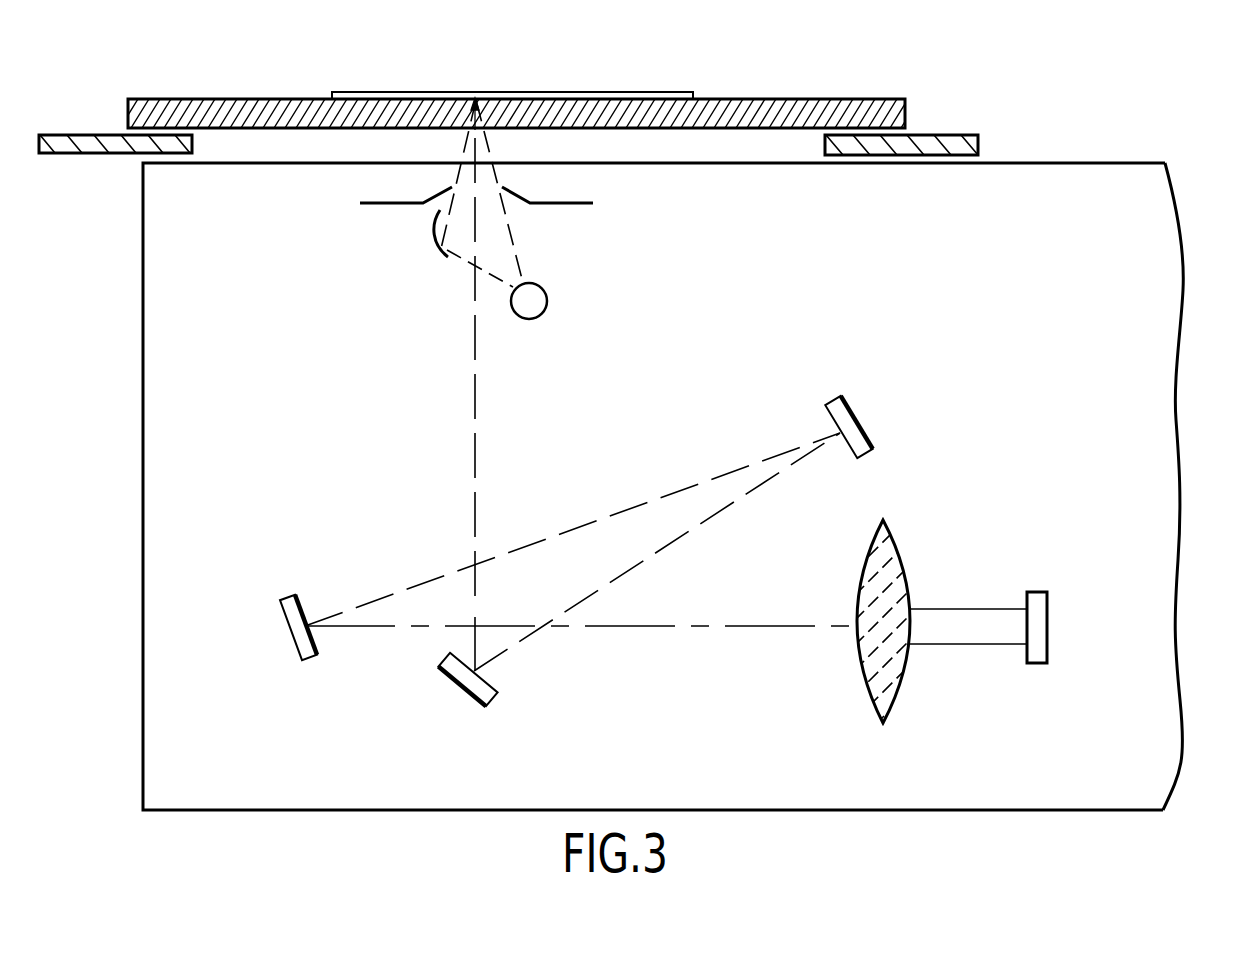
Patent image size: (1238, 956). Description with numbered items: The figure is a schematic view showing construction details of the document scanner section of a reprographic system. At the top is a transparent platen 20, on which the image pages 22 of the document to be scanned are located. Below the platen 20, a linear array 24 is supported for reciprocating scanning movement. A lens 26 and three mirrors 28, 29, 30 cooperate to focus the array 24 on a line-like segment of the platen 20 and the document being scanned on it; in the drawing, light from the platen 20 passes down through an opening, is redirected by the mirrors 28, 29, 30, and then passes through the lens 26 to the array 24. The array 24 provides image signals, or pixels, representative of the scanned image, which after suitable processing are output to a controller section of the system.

The transparent platen 20 is at (377, 128).
The image pages 22 is at (565, 93).
The linear array 24 is at (1048, 625).
The lens 26 is at (900, 680).
The mirror 28 is at (460, 688).
The mirror 29 is at (853, 413).
The mirror 30 is at (290, 630).